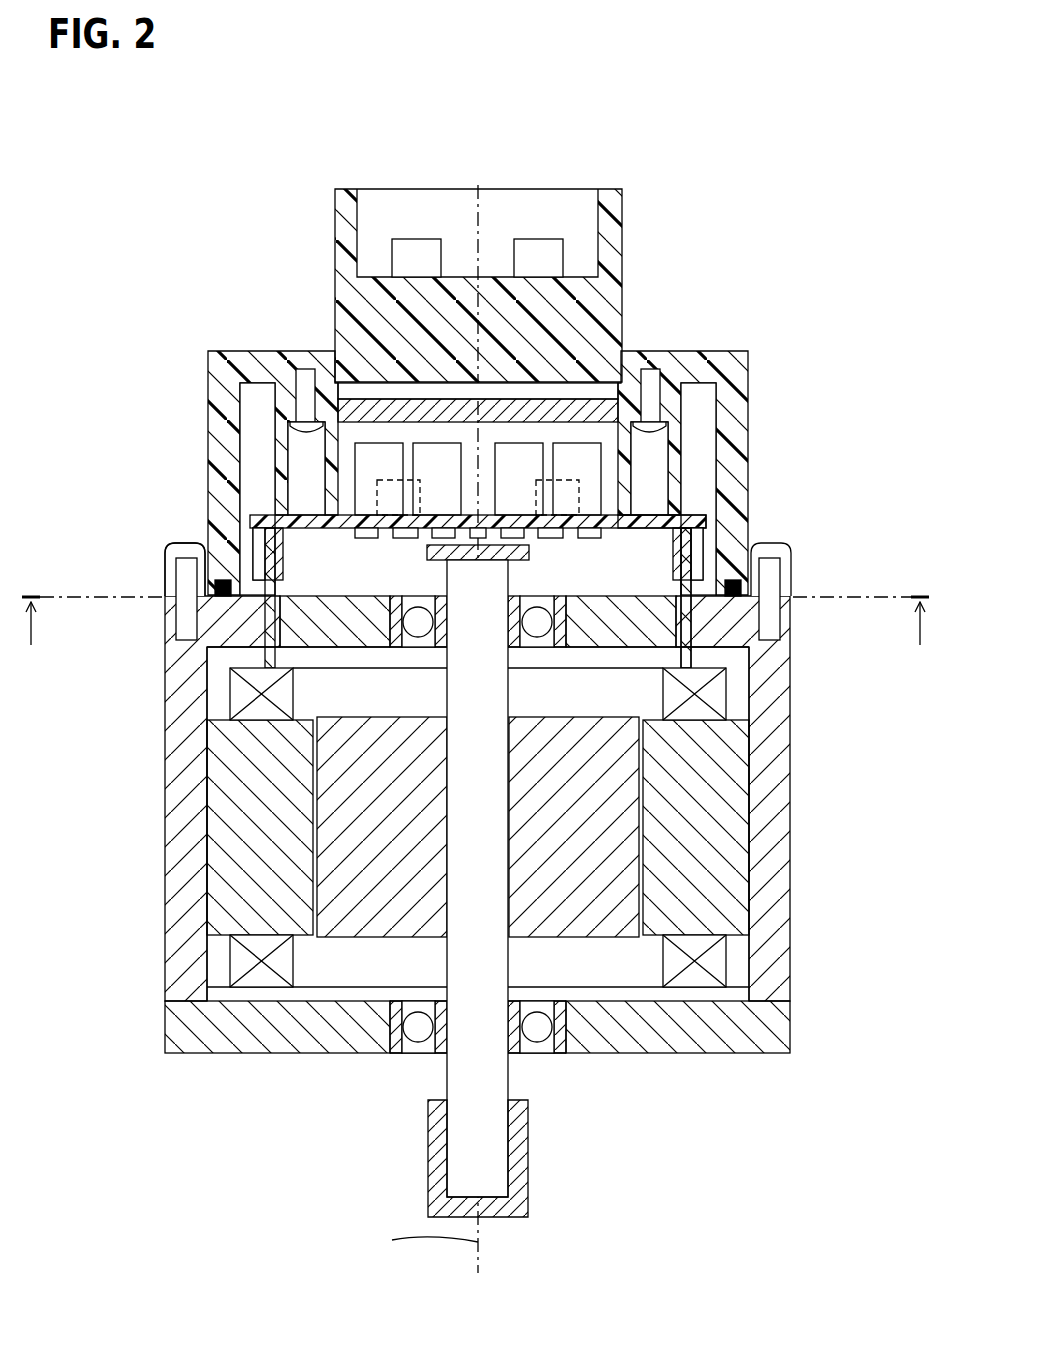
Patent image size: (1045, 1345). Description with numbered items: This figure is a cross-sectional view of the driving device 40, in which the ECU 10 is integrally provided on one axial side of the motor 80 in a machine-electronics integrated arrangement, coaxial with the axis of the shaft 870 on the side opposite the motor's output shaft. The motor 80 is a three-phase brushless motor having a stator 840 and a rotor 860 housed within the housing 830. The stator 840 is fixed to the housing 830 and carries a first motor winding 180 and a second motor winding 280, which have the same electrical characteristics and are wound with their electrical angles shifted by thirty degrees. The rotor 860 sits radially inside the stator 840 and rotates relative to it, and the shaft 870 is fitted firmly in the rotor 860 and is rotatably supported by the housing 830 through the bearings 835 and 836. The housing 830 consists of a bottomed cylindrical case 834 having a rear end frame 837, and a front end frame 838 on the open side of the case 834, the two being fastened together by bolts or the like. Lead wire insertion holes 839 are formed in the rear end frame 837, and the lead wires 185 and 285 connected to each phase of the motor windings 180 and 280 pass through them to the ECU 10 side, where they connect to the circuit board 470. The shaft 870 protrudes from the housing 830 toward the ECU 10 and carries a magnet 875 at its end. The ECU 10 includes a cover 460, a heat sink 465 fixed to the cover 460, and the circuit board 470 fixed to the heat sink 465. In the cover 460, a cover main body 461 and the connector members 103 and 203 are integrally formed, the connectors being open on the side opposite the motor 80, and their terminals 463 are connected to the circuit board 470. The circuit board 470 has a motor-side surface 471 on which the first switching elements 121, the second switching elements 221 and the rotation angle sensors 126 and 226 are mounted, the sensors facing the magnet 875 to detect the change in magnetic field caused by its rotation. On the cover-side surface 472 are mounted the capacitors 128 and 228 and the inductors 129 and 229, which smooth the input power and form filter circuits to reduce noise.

The driving device 40 is at (202, 186).
The ECU 10 is at (190, 352).
The motor 80 is at (160, 968).
The connector member 103 is at (403, 294).
The connector member 203 is at (338, 290).
The terminals 463 is at (408, 238).
The heat sink 465 is at (657, 400).
The cover 460 is at (752, 372).
The cover main body 461 is at (212, 390).
The circuit board 470 is at (705, 535).
The motor-side surface 471 is at (703, 542).
The cover-side surface 472 is at (660, 518).
The capacitor 128 is at (400, 478).
The inductor 129 is at (378, 492).
The capacitor 228 is at (560, 478).
The inductor 229 is at (578, 492).
The first switching elements 121 is at (252, 525).
The magnet 875 is at (258, 552).
The lead wires 285 is at (692, 635).
The second switching elements 221 is at (692, 575).
The rotation angle sensor 126 is at (273, 564).
The rotation angle sensor 226 is at (427, 552).
The housing 830 is at (512, 798).
The case 834 is at (760, 945).
The front end frame 838 is at (760, 1025).
The lead wire insertion holes 839 is at (265, 648).
The rear end frame 837 is at (166, 627).
The stator 840 is at (394, 824).
The lead wires 185 is at (383, 827).
The first motor winding 180 is at (383, 827).
The second motor winding 280 is at (240, 695).
The rotor 860 is at (595, 802).
The shaft 870 is at (495, 870).
The bearing 835 is at (548, 622).
The bearing 836 is at (540, 1043).